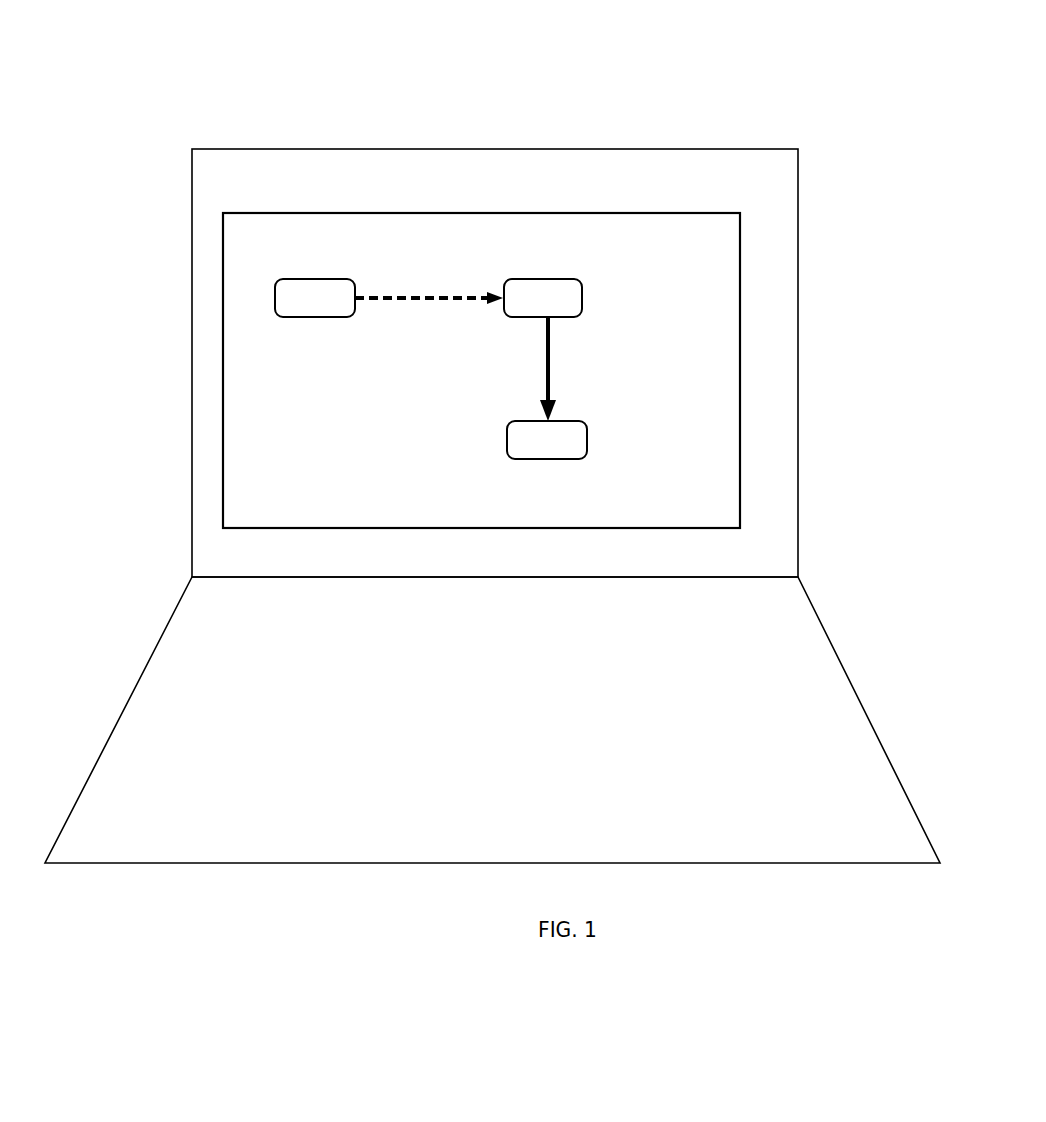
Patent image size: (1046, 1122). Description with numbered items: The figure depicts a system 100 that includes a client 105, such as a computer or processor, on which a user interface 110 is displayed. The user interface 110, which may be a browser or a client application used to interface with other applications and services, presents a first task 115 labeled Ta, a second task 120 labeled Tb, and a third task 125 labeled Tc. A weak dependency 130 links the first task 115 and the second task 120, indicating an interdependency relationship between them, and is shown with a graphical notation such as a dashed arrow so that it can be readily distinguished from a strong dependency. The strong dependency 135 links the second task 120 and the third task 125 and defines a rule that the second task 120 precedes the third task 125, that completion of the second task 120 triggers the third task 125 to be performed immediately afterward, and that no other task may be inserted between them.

The system 100 is at (588, 36).
The client 105 is at (567, 788).
The user interface 110 is at (740, 265).
The first task 115 is at (315, 318).
The second task 120 is at (582, 288).
The third task 125 is at (588, 449).
The weak dependency 130 is at (432, 297).
The strong dependency 135 is at (551, 368).